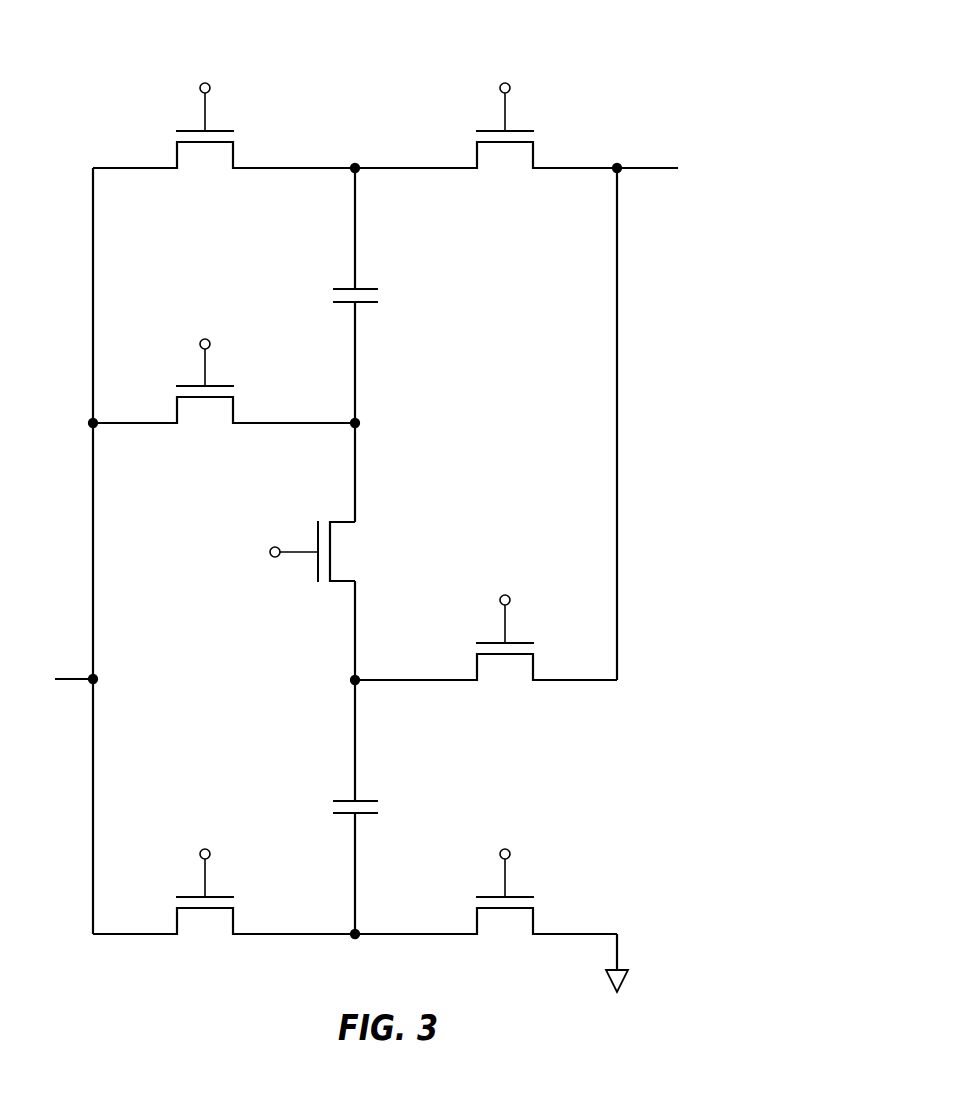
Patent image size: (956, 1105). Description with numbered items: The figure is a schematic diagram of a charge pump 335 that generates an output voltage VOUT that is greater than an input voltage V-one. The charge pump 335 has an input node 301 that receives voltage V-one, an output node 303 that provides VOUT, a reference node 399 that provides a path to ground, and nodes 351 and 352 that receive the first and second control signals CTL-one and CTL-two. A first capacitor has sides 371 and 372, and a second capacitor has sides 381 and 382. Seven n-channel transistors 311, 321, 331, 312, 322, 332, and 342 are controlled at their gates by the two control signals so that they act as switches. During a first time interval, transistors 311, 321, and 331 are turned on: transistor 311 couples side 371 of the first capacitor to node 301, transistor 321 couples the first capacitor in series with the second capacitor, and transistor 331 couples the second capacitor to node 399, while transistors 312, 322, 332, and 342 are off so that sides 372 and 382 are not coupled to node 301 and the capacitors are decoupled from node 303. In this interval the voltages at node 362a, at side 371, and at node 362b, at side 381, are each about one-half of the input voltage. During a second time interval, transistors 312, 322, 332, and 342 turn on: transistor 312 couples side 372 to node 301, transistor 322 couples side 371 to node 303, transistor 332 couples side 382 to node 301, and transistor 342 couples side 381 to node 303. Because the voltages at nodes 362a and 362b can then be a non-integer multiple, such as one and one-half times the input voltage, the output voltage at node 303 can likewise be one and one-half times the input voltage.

The charge pump 335 is at (637, 51).
The node 351 is at (210, 87).
The node 352 is at (510, 87).
The transistor 311 is at (235, 156).
The transistor 312 is at (235, 412).
The transistor 321 is at (342, 584).
The transistor 322 is at (535, 156).
The transistor 331 is at (535, 922).
The transistor 332 is at (235, 922).
The transistor 342 is at (535, 668).
The node 362a is at (356, 167).
The node 362b is at (352, 680).
The output node 303 is at (618, 167).
The input node 301 is at (97, 679).
The side of capacitor C1 371 is at (347, 287).
The side of capacitor C1 372 is at (365, 305).
The side of capacitor C2 381 is at (347, 799).
The side of capacitor C2 382 is at (365, 817).
The reference node 399 is at (628, 984).